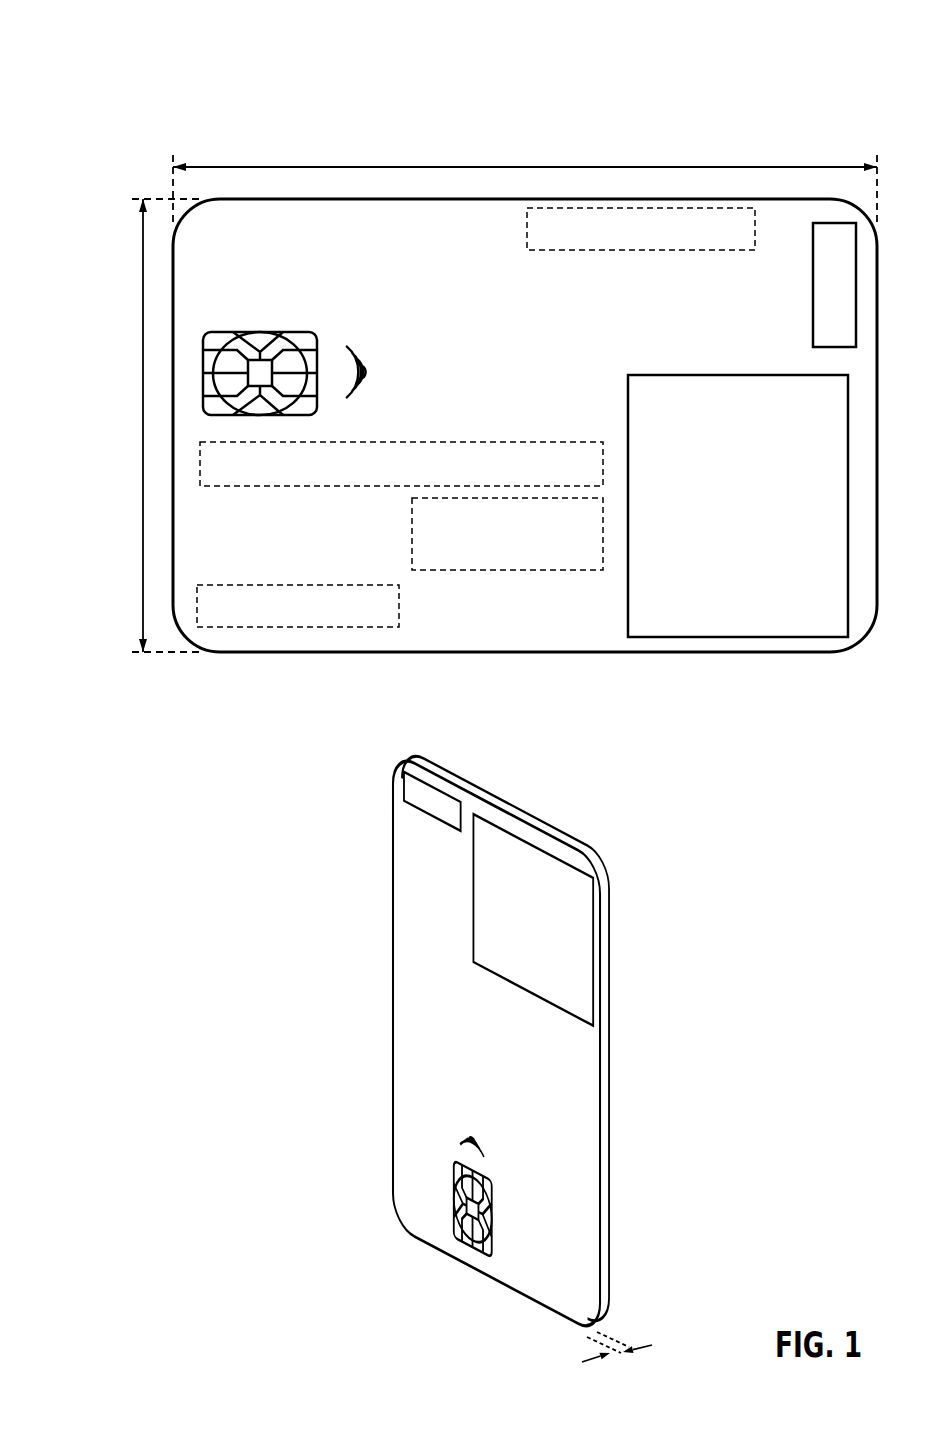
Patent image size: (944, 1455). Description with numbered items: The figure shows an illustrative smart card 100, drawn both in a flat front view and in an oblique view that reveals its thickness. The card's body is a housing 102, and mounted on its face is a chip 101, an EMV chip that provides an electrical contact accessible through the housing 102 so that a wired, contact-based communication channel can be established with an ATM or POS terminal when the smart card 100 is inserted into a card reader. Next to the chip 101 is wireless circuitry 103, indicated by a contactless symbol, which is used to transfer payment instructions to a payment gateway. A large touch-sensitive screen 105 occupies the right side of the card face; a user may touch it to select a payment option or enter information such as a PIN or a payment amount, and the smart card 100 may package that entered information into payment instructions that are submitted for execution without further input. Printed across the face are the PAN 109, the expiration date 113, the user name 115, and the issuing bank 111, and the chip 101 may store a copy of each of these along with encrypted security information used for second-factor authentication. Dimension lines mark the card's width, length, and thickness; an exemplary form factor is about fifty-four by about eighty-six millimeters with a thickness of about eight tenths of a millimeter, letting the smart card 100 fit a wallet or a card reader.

The smart card 100 is at (118, 55).
The chip 101 is at (300, 332).
The housing 102 is at (525, 653).
The wireless circuitry 103 is at (360, 373).
The touch-sensitive screen 105 is at (727, 637).
The PAN 109 is at (497, 442).
The issuing bank 111 is at (527, 228).
The expiration date 113 is at (410, 533).
The user name 115 is at (293, 628).